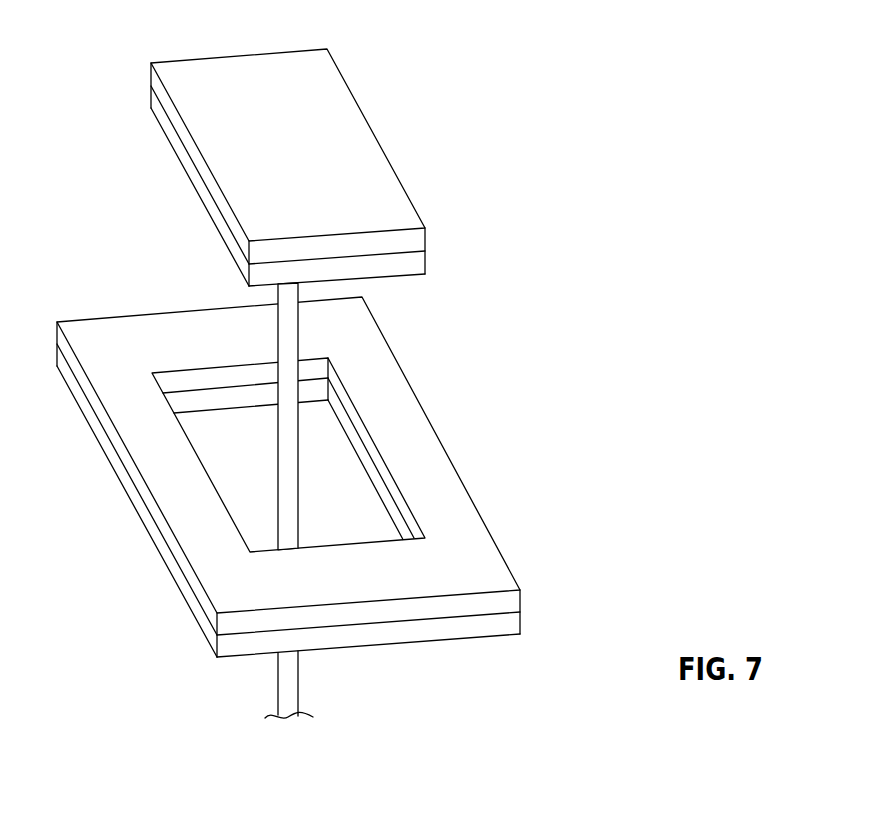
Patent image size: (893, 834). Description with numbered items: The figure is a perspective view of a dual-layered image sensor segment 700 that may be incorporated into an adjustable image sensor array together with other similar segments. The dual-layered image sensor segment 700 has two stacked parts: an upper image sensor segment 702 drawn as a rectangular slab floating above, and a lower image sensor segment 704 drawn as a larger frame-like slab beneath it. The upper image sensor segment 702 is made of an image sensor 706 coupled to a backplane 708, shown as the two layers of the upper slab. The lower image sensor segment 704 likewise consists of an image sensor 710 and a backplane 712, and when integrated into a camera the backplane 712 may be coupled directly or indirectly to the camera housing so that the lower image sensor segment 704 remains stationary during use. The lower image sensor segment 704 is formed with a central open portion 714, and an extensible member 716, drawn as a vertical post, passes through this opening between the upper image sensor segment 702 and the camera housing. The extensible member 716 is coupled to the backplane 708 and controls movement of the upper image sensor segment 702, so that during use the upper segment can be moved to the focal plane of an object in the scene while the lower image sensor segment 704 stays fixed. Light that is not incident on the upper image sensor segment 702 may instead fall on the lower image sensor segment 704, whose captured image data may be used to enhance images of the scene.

The dual-layered image sensor segment 700 is at (592, 52).
The upper image sensor segment 702 is at (187, 78).
The lower image sensor segment 704 is at (97, 335).
The image sensor 706 is at (415, 240).
The backplane 708 is at (415, 263).
The image sensor 710 is at (508, 600).
The backplane 712 is at (497, 625).
The central open portion 714 is at (380, 535).
The extensible member 716 is at (288, 438).